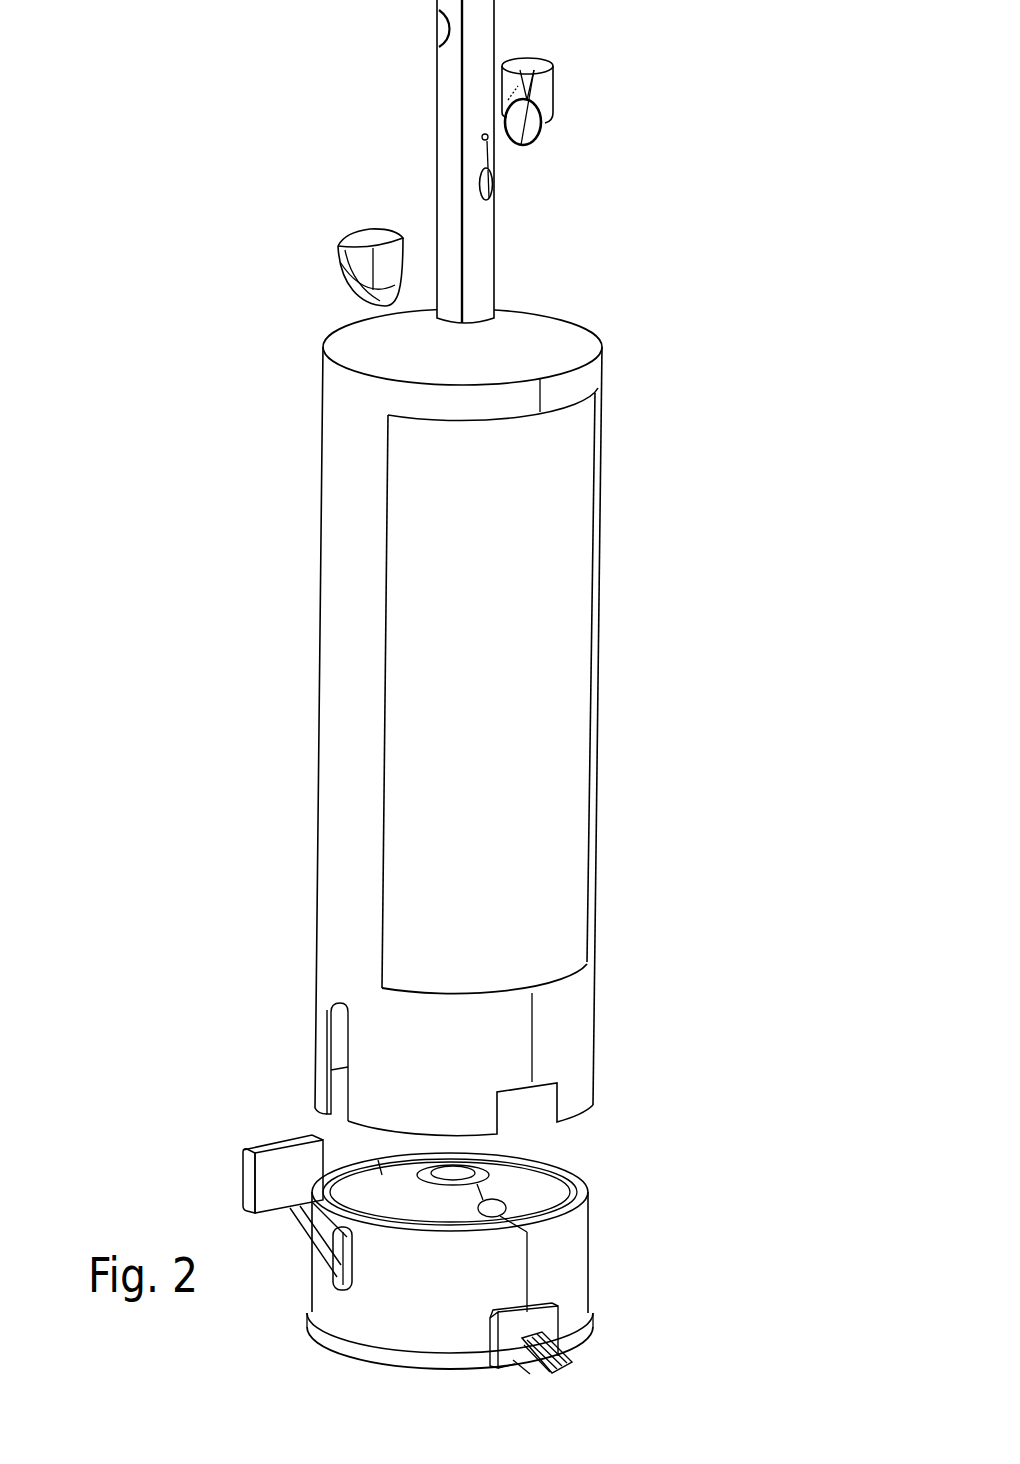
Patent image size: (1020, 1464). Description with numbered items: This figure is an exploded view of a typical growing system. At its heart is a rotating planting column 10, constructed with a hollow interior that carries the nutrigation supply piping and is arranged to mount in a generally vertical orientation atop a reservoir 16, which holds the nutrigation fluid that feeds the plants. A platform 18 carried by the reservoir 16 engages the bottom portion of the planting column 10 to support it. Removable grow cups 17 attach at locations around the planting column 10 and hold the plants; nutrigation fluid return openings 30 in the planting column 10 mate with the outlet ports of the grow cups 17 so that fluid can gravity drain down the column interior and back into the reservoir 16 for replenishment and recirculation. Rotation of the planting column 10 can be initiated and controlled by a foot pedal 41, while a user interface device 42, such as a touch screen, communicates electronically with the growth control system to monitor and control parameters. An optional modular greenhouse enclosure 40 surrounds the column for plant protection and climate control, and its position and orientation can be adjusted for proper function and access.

The planting column 10 is at (478, 250).
The reservoir 16 is at (555, 1257).
The removable grow cup 17 is at (542, 90).
The platform 18 is at (538, 1208).
The nutrigation fluid return opening 30 is at (438, 38).
The modular greenhouse enclosure 40 is at (342, 468).
The foot pedal 41 is at (552, 1376).
The user interface device 42 is at (302, 1158).